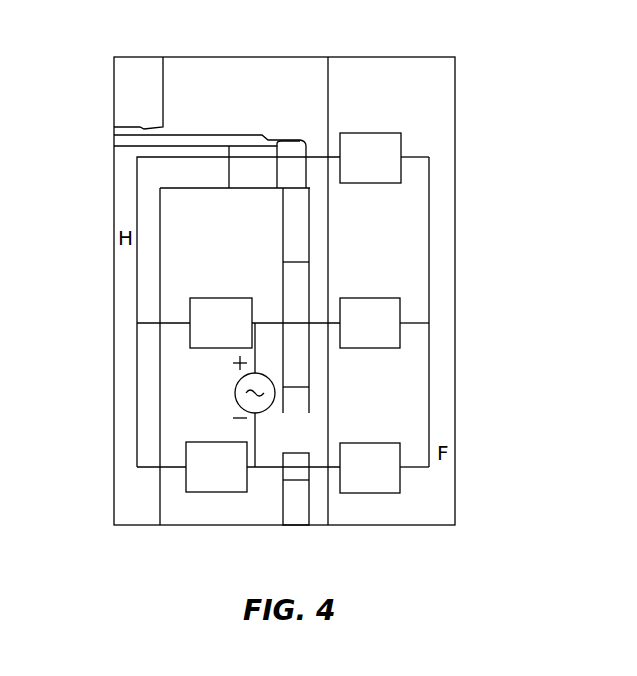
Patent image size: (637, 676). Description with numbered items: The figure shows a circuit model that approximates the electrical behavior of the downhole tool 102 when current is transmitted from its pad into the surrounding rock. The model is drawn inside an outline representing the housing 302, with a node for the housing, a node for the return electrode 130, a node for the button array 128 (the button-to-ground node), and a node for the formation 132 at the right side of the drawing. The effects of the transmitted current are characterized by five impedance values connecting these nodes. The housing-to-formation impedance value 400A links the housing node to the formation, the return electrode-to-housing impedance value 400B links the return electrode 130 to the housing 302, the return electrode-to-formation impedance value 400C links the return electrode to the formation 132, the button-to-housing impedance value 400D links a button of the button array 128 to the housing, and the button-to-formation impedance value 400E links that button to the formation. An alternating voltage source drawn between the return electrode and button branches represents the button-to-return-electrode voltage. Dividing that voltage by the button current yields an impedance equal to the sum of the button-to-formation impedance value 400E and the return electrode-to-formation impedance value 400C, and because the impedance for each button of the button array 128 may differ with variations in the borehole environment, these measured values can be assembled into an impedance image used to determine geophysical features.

The downhole tool 102 is at (140, 77).
The housing 302 is at (118, 200).
The return electrode 130 is at (305, 282).
The formation 132 is at (443, 392).
The button array 128 is at (295, 470).
The housing-to-formation impedance value 400A is at (366, 133).
The return electrode-to-housing impedance value 400B is at (213, 298).
The return electrode-to-formation impedance value 400C is at (217, 492).
The button-to-housing impedance value 400D is at (348, 298).
The button-to-formation impedance value 400E is at (348, 443).